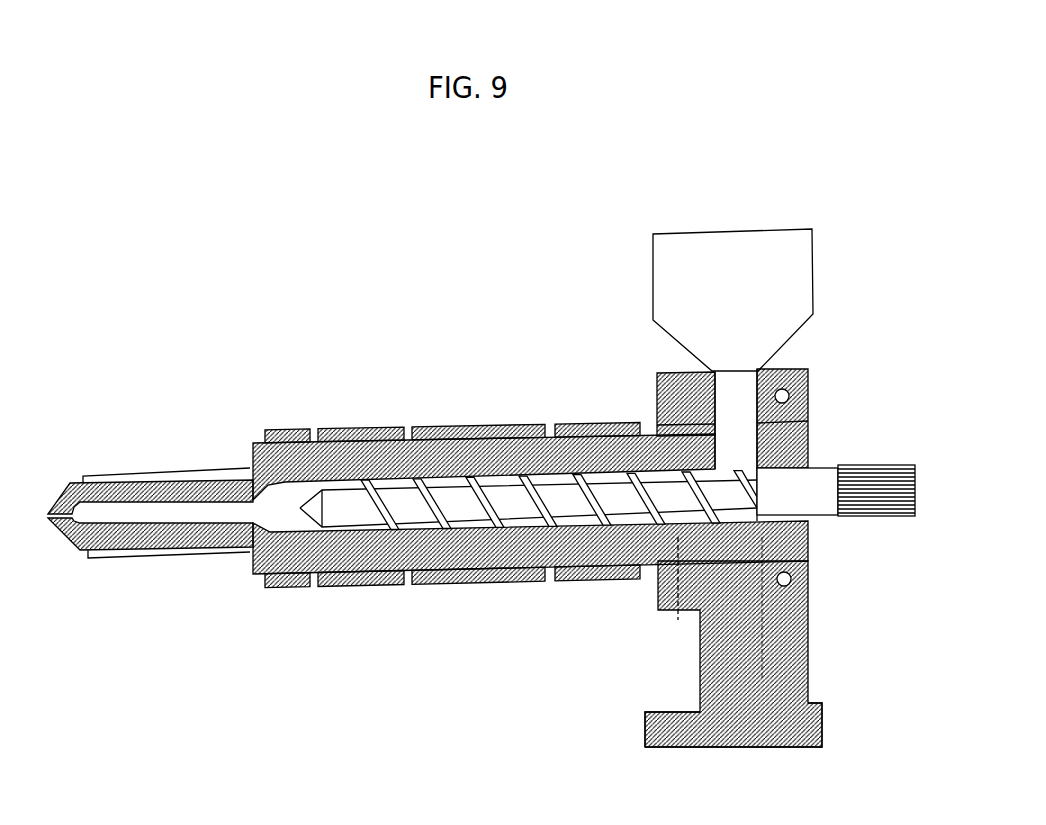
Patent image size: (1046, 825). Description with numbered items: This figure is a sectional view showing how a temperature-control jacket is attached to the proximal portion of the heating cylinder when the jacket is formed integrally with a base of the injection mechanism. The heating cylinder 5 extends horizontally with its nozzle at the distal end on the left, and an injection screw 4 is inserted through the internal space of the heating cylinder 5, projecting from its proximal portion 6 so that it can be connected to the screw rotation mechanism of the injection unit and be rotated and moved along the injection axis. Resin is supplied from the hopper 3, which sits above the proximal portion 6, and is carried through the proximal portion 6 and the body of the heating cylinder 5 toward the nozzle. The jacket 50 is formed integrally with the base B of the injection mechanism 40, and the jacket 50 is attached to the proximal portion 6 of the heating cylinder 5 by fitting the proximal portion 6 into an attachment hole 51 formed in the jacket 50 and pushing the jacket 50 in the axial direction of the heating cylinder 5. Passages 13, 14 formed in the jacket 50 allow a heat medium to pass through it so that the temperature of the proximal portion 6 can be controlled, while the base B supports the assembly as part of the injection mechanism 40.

The hopper 3 is at (765, 252).
The injection mechanism 40 is at (448, 392).
The jacket 50 is at (675, 390).
The passage 13 is at (808, 372).
The injection screw 4 is at (817, 480).
The attachment hole 51 is at (765, 553).
The passage 14 is at (788, 586).
The proximal portion 6 is at (676, 618).
The base B is at (790, 727).
The heating cylinder 5 is at (365, 552).